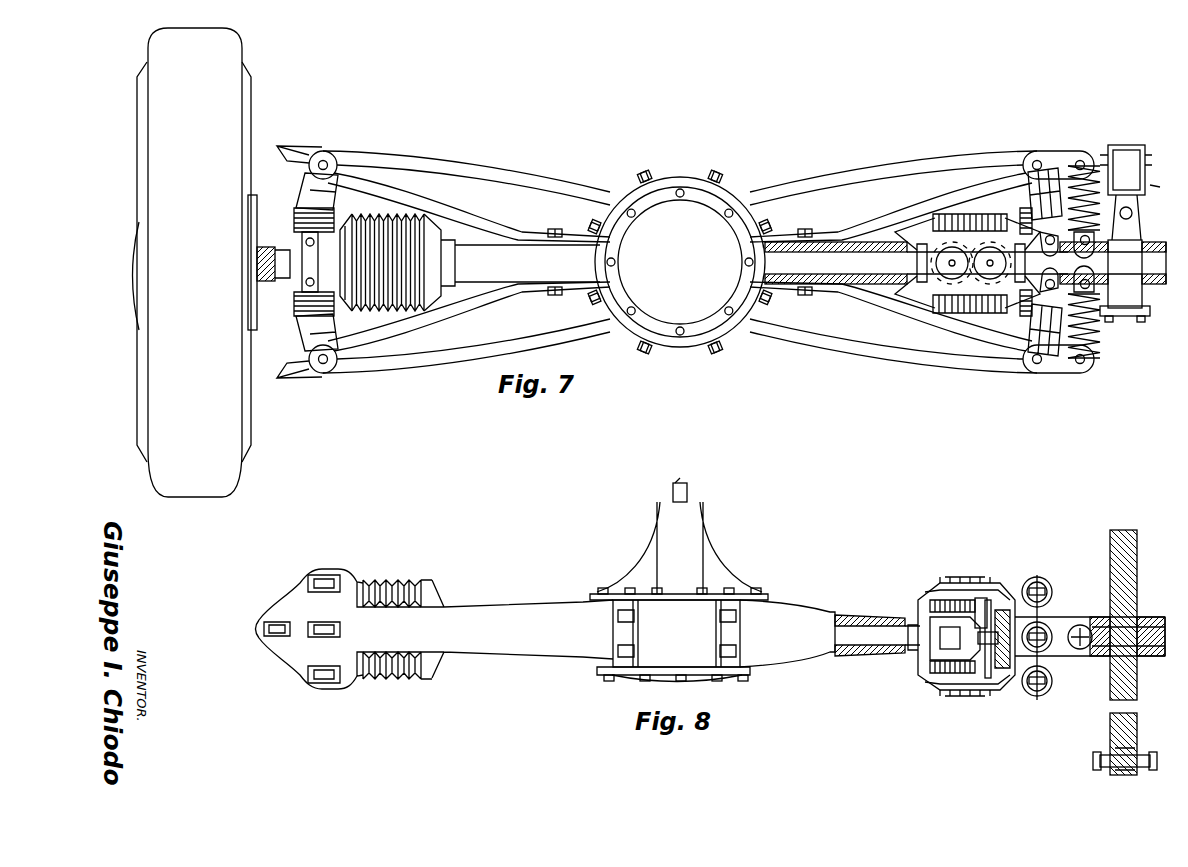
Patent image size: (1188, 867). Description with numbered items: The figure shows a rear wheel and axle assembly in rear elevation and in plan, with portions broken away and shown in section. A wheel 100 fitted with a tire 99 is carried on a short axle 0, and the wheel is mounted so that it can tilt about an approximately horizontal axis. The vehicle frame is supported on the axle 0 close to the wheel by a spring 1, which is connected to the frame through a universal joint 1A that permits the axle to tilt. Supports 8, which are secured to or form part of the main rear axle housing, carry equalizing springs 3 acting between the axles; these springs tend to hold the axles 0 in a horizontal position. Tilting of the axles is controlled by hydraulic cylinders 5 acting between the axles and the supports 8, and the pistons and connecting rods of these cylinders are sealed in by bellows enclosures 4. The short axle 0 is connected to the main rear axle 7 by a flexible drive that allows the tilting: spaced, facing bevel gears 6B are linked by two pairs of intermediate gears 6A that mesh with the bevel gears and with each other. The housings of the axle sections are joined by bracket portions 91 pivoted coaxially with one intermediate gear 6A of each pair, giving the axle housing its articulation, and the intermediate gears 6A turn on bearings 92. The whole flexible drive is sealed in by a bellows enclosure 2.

In FIG. 7, the short axle 0 is at (280, 283).
In FIG. 7, the spring 1 is at (1138, 156).
In FIG. 8, the spring 1 is at (1148, 766).
In FIG. 7, the universal joint 1A is at (1145, 204).
In FIG. 7, the bellows enclosure 2 is at (366, 216).
In FIG. 8, the bellows enclosure 2 is at (388, 580).
In FIG. 7, the equalizing spring 3 is at (1088, 166).
In FIG. 8, the equalizing spring 3 is at (1080, 625).
In FIG. 7, the bellows enclosure 4 is at (295, 214).
In FIG. 8, the bellows enclosure 4 is at (308, 583).
In FIG. 7, the hydraulic cylinder 5 is at (1032, 344).
In FIG. 8, the hydraulic cylinder 5 is at (1028, 585).
In FIG. 7, the intermediate gear 6A is at (985, 245).
In FIG. 8, the intermediate gear 6A is at (965, 600).
In FIG. 7, the bevel gear 6B is at (940, 282).
In FIG. 8, the bevel gear 6B is at (925, 614).
In FIG. 7, the main rear axle 7 is at (873, 264).
In FIG. 8, the main rear axle 7 is at (880, 637).
In FIG. 7, the support 8 is at (540, 221).
In FIG. 8, the support 8 is at (512, 639).
In FIG. 8, the bracket portion 91 is at (920, 672).
In FIG. 8, the bearing 92 is at (940, 588).
In FIG. 7, the tire 99 is at (194, 493).
In FIG. 7, the wheel 100 is at (131, 272).